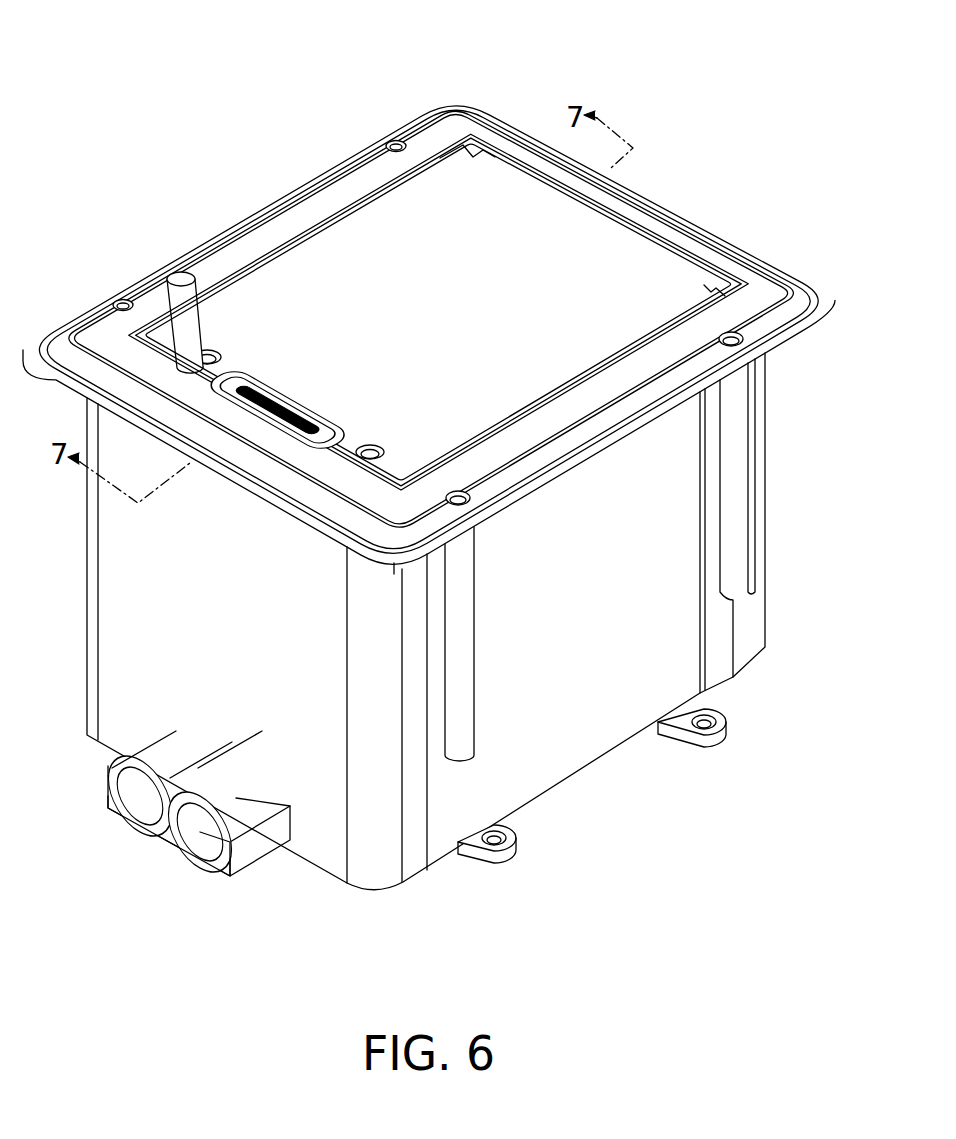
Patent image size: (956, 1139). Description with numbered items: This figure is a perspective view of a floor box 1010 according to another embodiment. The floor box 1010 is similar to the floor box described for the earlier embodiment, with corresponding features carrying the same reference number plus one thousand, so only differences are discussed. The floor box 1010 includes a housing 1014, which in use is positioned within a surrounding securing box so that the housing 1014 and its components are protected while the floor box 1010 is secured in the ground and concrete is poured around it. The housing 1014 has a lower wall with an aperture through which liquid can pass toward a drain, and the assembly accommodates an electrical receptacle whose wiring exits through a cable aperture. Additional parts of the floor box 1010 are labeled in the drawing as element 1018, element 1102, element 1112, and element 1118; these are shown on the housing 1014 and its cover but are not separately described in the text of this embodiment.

The floor box 1010 is at (174, 100).
The housing 1014 is at (577, 725).
The cover panel 1018 is at (540, 200).
The raised frame 1102 is at (717, 282).
The conduit openings 1112 is at (135, 797).
The mounting feet 1118 is at (495, 862).